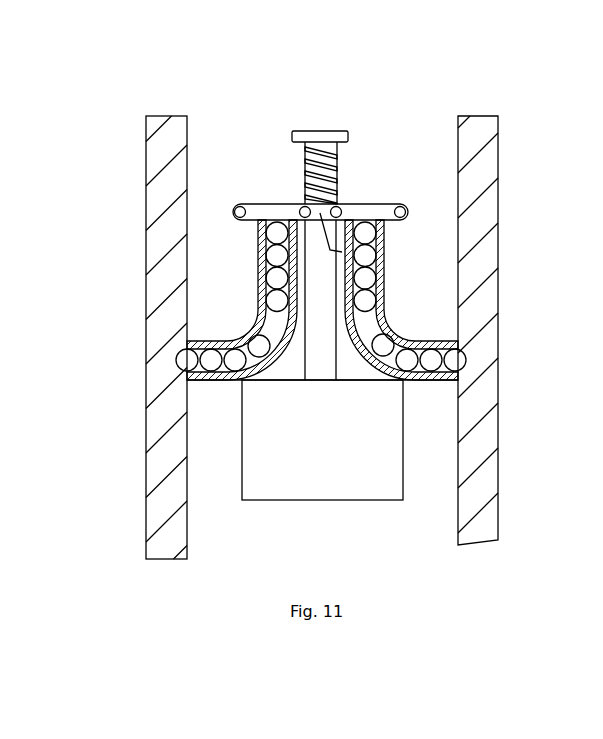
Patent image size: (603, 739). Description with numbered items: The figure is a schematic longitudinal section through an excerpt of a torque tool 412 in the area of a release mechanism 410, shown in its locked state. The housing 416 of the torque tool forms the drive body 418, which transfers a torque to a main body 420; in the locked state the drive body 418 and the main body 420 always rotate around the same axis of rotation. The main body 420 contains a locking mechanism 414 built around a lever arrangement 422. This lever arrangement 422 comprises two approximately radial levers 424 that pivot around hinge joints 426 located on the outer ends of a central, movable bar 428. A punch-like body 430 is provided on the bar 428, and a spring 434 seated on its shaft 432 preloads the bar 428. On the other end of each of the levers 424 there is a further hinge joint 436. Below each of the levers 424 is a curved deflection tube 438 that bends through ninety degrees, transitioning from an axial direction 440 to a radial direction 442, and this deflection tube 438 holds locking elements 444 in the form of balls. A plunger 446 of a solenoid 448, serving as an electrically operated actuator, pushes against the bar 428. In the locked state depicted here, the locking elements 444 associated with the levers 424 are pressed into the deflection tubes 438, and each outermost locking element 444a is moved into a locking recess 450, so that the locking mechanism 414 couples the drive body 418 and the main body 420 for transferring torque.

The release mechanism 410 is at (210, 255).
The torque tool 412 is at (499, 111).
The locking mechanism 414 is at (342, 196).
The housing 416 is at (483, 450).
The drive body 418 is at (163, 538).
The main body 420 is at (432, 168).
The lever arrangement 422 is at (280, 190).
The levers 424 is at (255, 210).
The hinge joints 426 is at (385, 230).
The bar 428 is at (385, 254).
The punch-like body 430 is at (300, 129).
The shaft 432 is at (331, 140).
The spring 434 is at (314, 148).
The hinge joint 436 is at (235, 220).
The curved deflection tube 438 is at (352, 363).
The axial direction 440 is at (392, 286).
The radial direction 442 is at (438, 378).
The locking elements 444 is at (275, 282).
The outermost locking element 444a is at (183, 366).
The plunger 446 is at (328, 307).
The solenoid 448 is at (304, 470).
The locking recess 450 is at (185, 380).